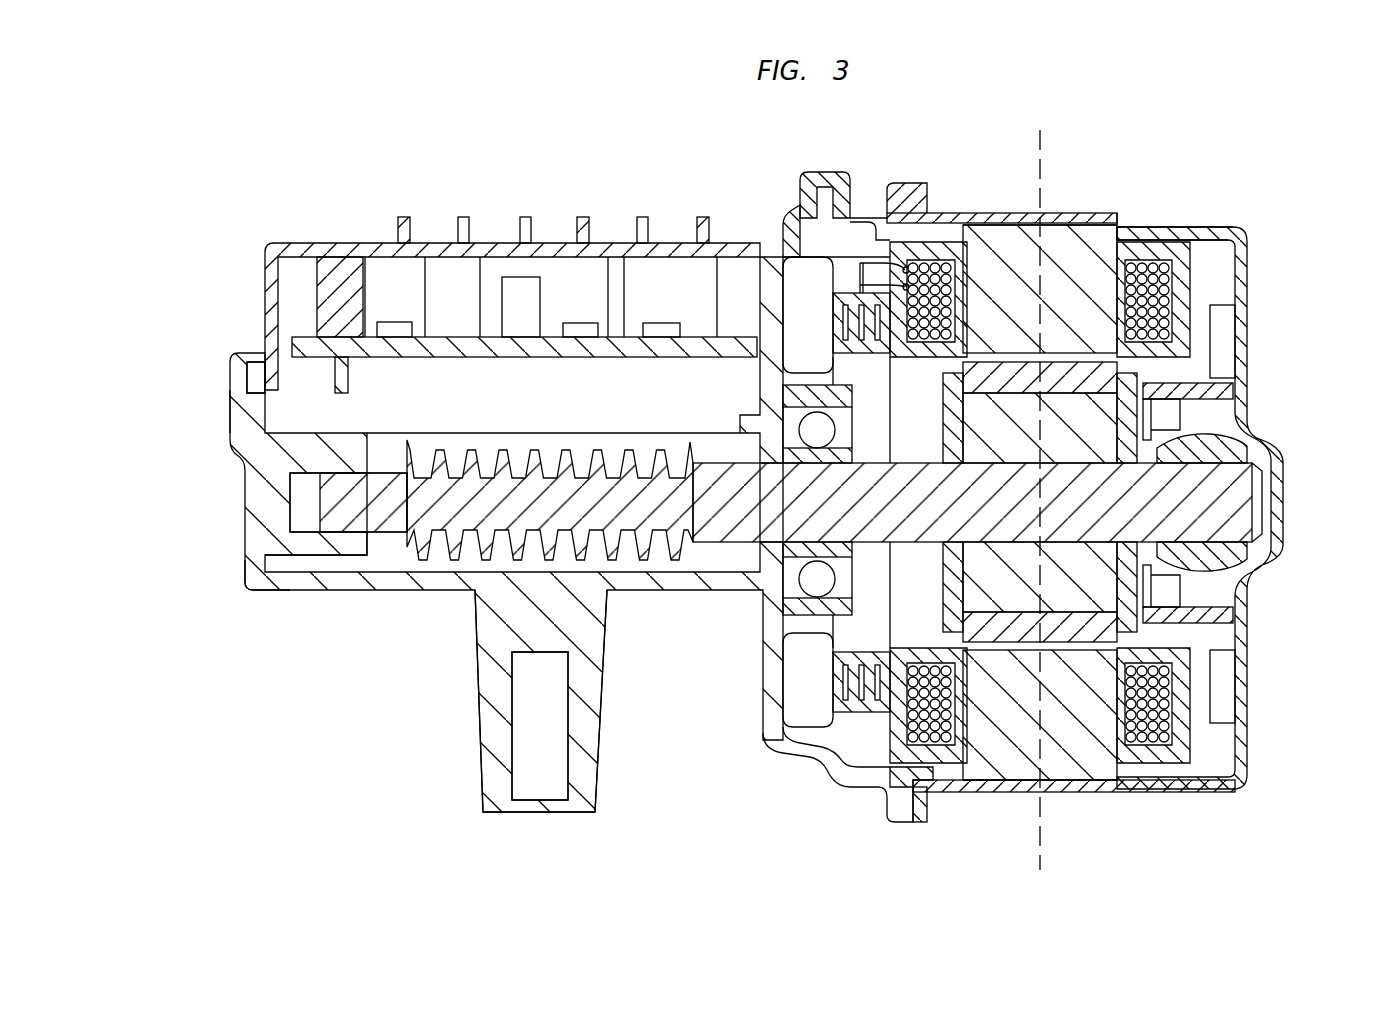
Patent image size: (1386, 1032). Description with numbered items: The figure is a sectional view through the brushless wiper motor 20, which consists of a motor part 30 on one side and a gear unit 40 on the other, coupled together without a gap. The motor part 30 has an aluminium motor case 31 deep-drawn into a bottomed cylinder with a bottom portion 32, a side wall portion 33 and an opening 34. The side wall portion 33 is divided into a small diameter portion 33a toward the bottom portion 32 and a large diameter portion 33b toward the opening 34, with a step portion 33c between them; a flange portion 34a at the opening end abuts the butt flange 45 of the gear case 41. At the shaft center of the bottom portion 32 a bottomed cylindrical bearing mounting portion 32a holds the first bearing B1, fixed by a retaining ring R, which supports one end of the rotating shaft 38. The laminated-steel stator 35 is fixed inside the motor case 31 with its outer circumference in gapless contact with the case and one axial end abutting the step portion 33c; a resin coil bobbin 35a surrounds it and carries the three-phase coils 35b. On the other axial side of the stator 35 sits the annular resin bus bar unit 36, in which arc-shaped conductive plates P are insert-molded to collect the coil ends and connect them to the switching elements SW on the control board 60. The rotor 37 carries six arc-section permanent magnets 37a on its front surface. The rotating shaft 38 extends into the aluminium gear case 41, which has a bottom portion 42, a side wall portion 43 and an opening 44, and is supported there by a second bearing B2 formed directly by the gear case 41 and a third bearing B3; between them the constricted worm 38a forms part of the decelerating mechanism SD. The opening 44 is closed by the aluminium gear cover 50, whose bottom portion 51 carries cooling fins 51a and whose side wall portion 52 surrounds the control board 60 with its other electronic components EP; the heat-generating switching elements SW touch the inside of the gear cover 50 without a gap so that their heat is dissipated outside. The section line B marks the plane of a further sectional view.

The brushless wiper motor 20 is at (266, 209).
The motor part 30 is at (1263, 222).
The motor case 31 is at (1247, 307).
The bottom portion 32 is at (1238, 698).
The bearing mounting portion 32a is at (1198, 590).
The side wall portion 33 is at (1103, 216).
The small diameter portion 33a is at (1200, 228).
The large diameter portion 33b is at (996, 222).
The step portion 33c is at (1130, 226).
The opening 34 is at (908, 783).
The flange portion 34a is at (922, 822).
The stator 35 is at (1068, 250).
The coil bobbin 35a is at (1155, 764).
The coils 35b is at (1176, 722).
The bus bar unit 36 is at (840, 745).
The rotor 37 is at (1002, 690).
The permanent magnets 37a is at (1072, 625).
The rotating shaft 38 is at (1210, 500).
The worm 38a is at (520, 590).
The gear unit 40 is at (248, 252).
The gear case 41 is at (253, 558).
The bottom portion 42 is at (672, 600).
The side wall portion 43 is at (300, 400).
The opening 44 is at (748, 282).
The butt flange 45 is at (905, 205).
The gear cover 50 is at (374, 244).
The bottom portion 51 is at (555, 240).
The cooling fins 51a is at (462, 238).
The side wall portion 52 is at (262, 324).
The control board 60 is at (330, 352).
The section line B is at (1040, 132).
The first bearing B1 is at (1232, 440).
The second bearing B2 is at (335, 545).
The third bearing B3 is at (800, 605).
The electronic components EP is at (393, 332).
The conductive plates P is at (845, 262).
The retaining ring R is at (1234, 396).
The decelerating mechanism SD is at (467, 560).
The switching elements SW is at (415, 310).